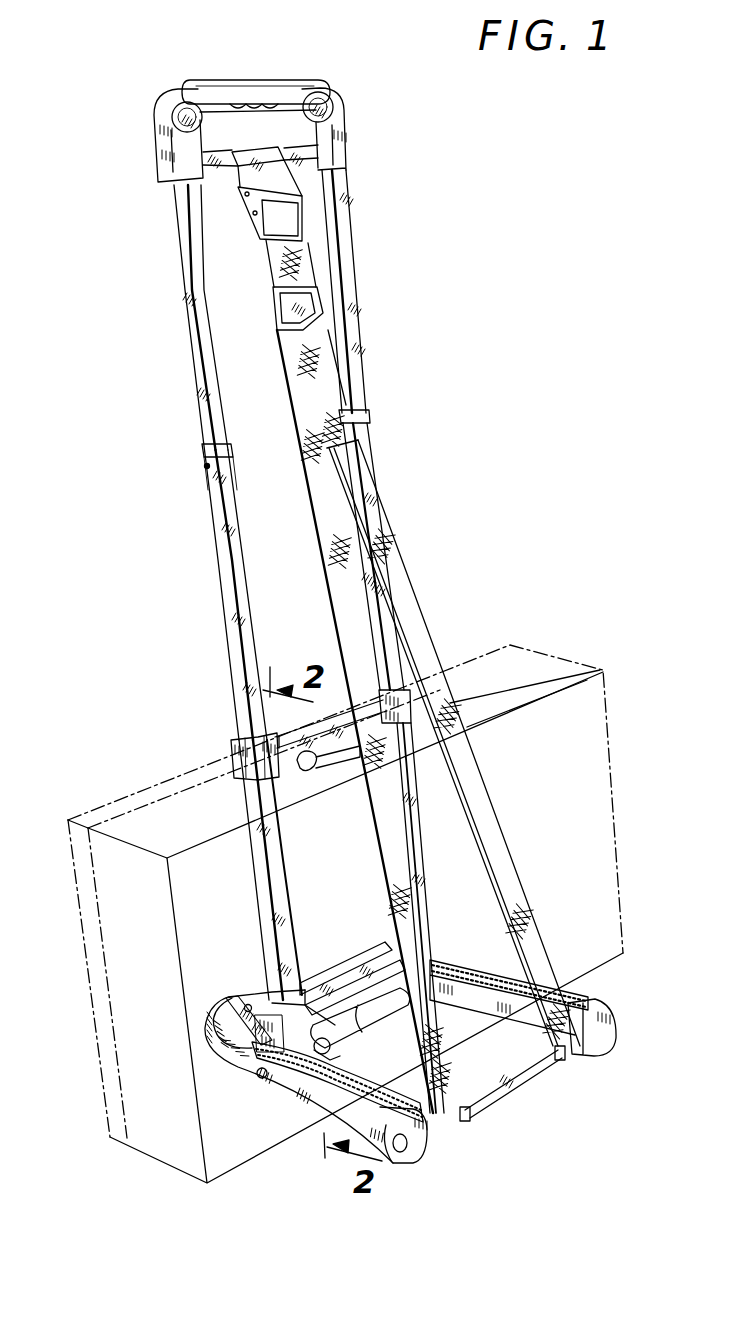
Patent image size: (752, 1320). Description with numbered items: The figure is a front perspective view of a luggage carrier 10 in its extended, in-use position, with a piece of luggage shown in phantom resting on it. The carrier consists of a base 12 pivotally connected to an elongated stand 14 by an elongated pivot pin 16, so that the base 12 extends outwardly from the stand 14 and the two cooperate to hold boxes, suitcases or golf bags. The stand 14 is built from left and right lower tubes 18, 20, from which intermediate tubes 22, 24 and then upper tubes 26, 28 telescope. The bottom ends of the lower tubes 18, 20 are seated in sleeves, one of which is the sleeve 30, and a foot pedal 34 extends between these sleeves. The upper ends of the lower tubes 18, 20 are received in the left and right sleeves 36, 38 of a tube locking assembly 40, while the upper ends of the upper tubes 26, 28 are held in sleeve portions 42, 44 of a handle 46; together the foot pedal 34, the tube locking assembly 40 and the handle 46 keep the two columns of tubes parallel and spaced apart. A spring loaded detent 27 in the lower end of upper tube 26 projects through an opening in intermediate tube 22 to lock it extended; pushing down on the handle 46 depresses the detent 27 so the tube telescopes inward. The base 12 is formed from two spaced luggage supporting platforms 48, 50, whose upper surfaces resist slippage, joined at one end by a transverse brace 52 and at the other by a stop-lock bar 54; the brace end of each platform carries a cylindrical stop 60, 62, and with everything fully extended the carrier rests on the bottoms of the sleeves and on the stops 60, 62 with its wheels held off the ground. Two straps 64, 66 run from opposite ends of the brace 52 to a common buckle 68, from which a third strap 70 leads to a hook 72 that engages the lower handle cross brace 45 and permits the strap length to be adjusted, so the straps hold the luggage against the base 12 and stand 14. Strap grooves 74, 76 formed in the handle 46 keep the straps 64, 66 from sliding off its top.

The luggage carrier 10 is at (428, 306).
The base 12 is at (598, 1004).
The stand 14 is at (214, 554).
The pivot pin 16 is at (262, 1080).
The left lower tube 18 is at (266, 930).
The right lower tube 20 is at (412, 818).
The left intermediate tube 22 is at (225, 609).
The right intermediate tube 24 is at (376, 468).
The left upper tube 26 is at (180, 256).
The detent 27 is at (205, 462).
The right upper tube 28 is at (350, 251).
The sleeve 30 is at (327, 1052).
The foot pedal 34 is at (334, 966).
The left sleeve 36 is at (236, 748).
The right sleeve 38 is at (405, 690).
The tube locking assembly 40 is at (337, 705).
The sleeve portion 42 is at (160, 158).
The sleeve portion 44 is at (346, 140).
The lower handle cross brace 45 is at (292, 152).
The handle 46 is at (244, 82).
The luggage supporting platform 48 is at (297, 1100).
The luggage supporting platform 50 is at (480, 968).
The brace 52 is at (526, 1095).
The stop-lock bar 54 is at (367, 1033).
The stop 60 is at (420, 1156).
The stop 62 is at (598, 1052).
The strap 64 is at (414, 905).
The strap 66 is at (406, 556).
The buckle 68 is at (322, 322).
The third strap 70 is at (264, 266).
The hook 72 is at (246, 156).
The strap groove 74 is at (182, 96).
The strap groove 76 is at (306, 88).